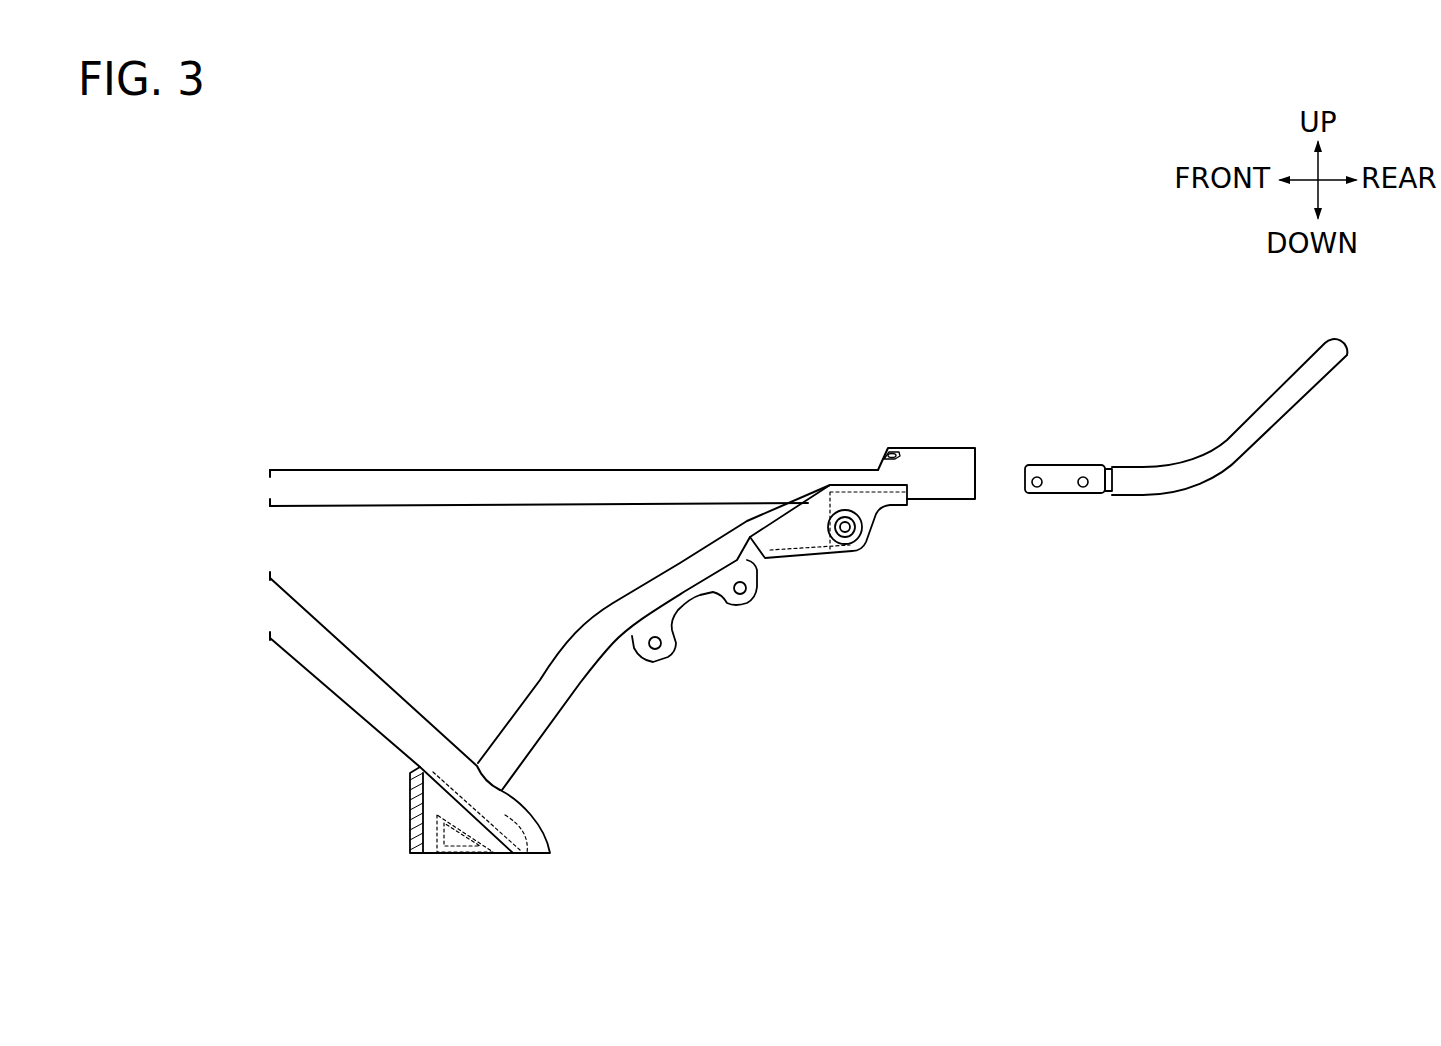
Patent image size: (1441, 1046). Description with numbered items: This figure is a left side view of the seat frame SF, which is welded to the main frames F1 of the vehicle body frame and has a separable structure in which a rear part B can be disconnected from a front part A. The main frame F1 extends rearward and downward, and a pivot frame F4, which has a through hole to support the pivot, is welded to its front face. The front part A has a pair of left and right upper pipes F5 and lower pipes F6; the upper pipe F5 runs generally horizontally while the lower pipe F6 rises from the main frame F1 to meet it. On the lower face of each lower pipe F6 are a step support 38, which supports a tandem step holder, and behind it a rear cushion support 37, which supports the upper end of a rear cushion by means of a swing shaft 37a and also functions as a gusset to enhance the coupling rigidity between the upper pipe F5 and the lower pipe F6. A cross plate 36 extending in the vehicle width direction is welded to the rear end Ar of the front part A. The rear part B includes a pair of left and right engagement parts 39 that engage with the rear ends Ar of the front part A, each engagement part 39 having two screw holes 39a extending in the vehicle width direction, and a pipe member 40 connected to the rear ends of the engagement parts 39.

The upper pipe F5 is at (400, 468).
The front part A is at (663, 470).
The cross plate 36 is at (927, 448).
The seat frame SF is at (877, 268).
The rear end Ar is at (933, 501).
The rear cushion support 37 is at (800, 558).
The swing shaft 37a is at (862, 543).
The lower pipe F6 is at (530, 741).
The step support 38 is at (670, 658).
The main frame F1 is at (350, 670).
The pivot frame F4 is at (482, 838).
The engagement part 39 is at (1062, 483).
The screw hole 39a is at (1034, 477).
The pipe member 40 is at (1243, 450).
The rear part B is at (1213, 443).